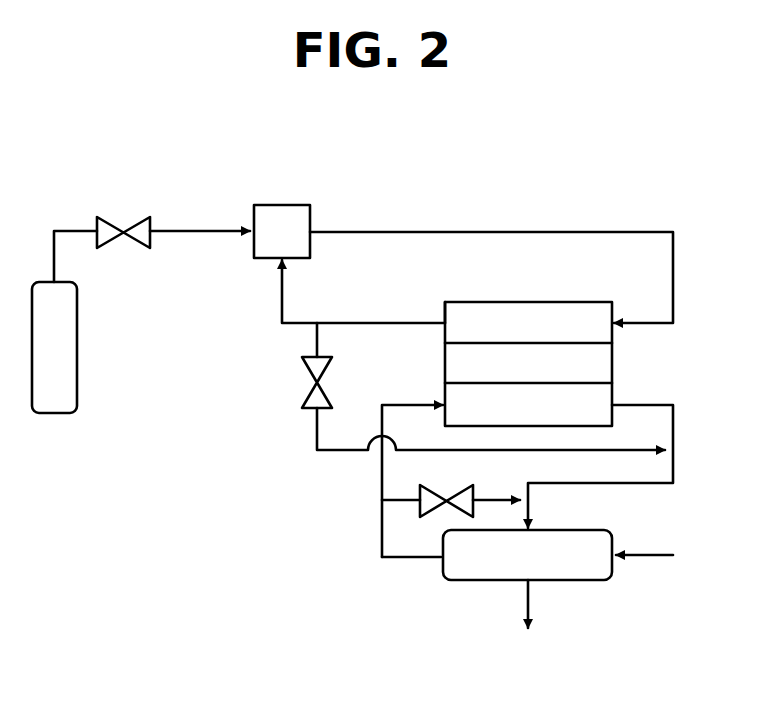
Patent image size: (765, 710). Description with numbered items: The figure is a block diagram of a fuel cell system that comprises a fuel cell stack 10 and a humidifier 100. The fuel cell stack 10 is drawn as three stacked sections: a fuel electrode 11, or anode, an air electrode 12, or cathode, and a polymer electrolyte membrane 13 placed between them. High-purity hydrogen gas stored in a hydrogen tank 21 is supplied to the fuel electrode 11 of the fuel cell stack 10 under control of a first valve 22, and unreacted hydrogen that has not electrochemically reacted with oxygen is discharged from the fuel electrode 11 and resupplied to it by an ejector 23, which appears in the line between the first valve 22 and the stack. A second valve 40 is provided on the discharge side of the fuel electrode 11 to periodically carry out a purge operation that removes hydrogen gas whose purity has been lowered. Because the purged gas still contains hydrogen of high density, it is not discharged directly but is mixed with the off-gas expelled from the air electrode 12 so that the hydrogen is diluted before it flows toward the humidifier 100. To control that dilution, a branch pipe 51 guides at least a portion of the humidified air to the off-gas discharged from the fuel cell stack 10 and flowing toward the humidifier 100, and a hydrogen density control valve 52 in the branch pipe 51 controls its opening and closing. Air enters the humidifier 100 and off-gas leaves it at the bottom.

The fuel cell stack 10 is at (573, 415).
The fuel electrode 11 is at (528, 326).
The air electrode 12 is at (528, 403).
The polymer electrolyte membrane 13 is at (528, 366).
The hydrogen tank 21 is at (77, 372).
The first valve 22 is at (130, 214).
The ejector 23 is at (297, 203).
The second valve 40 is at (304, 398).
The branch pipe 51 is at (496, 497).
The hydrogen density control valve 52 is at (433, 515).
The humidifier 100 is at (615, 571).